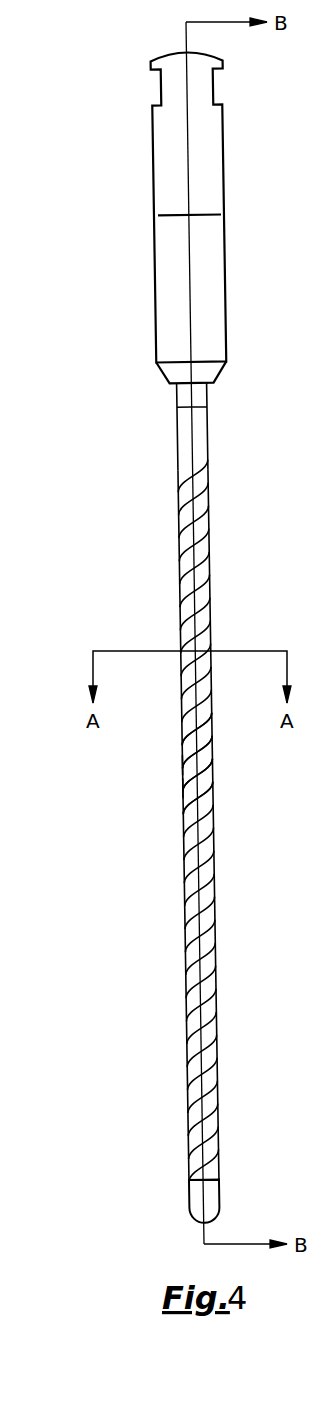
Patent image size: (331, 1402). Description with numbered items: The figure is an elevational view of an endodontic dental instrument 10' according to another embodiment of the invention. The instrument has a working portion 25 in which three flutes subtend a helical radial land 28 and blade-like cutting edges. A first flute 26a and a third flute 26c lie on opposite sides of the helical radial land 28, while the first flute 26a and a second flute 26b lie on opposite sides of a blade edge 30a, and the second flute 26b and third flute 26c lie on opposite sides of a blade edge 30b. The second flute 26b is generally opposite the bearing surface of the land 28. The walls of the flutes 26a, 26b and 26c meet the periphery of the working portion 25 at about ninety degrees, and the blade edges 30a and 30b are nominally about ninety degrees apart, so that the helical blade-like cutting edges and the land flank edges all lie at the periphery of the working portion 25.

The endodontic dental instrument 10' is at (134, 235).
The working portion 25 is at (212, 574).
The helical radial land 28 is at (208, 745).
The first flute 26a is at (210, 767).
The second flute 26b is at (210, 789).
The third flute 26c is at (210, 811).
The blade edge 30a is at (188, 763).
The blade edge 30b is at (190, 785).